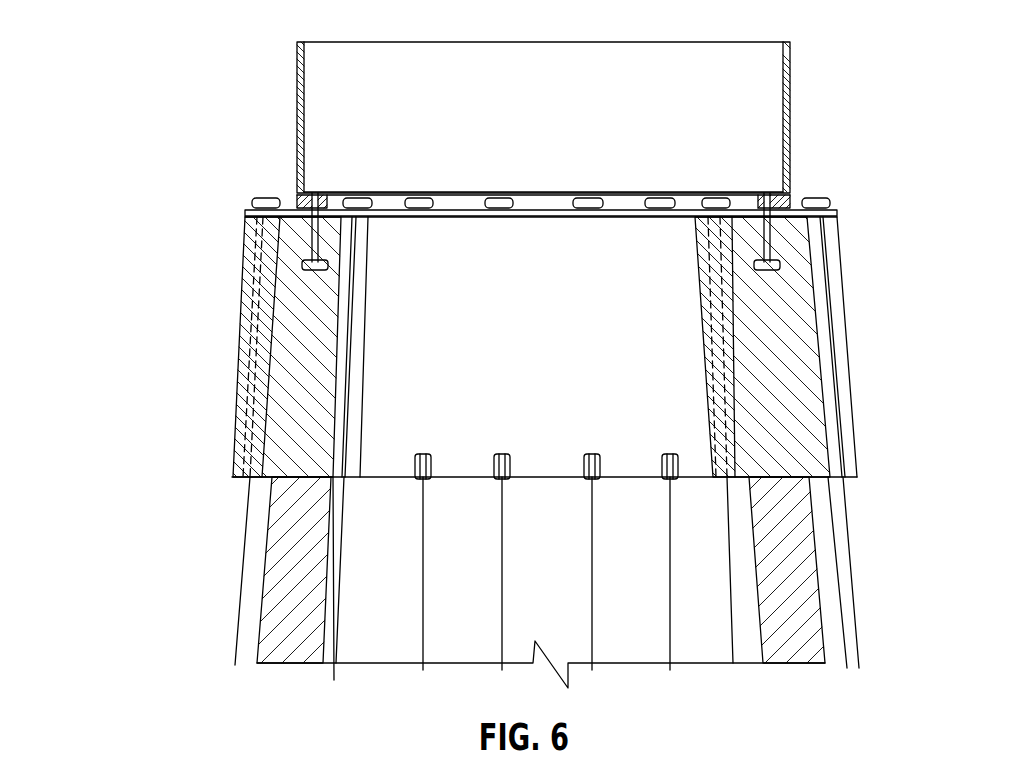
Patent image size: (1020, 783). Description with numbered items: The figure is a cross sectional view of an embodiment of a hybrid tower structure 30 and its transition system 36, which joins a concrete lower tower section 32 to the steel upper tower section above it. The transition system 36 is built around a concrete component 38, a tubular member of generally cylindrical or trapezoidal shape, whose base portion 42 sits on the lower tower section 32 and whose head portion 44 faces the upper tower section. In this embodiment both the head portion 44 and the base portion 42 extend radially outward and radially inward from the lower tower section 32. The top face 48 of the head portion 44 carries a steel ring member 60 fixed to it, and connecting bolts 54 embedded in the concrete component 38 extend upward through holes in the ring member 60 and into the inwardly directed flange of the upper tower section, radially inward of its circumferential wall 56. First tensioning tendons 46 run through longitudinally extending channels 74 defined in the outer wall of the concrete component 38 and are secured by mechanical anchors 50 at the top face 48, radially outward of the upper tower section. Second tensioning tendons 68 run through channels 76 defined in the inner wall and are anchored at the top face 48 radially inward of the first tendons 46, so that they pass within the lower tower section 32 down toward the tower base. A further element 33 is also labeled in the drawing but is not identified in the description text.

The tower structure 30 is at (176, 97).
The lower tower section 32 is at (622, 653).
The lower support block 33 is at (262, 605).
The transition system 36 is at (195, 329).
The concrete component 38 is at (855, 324).
The base portion 42 is at (237, 444).
The head portion 44 is at (243, 240).
The first tensioning tendons 46 is at (242, 537).
The top face 48 is at (537, 213).
The mechanical anchors 50 is at (265, 197).
The connecting bolts 54 is at (768, 232).
The circumferential wall 56 is at (763, 101).
The ring member 60 is at (455, 207).
The second tensioning tendons 68 is at (347, 395).
The channels 74 is at (843, 378).
The channels 76 is at (365, 305).